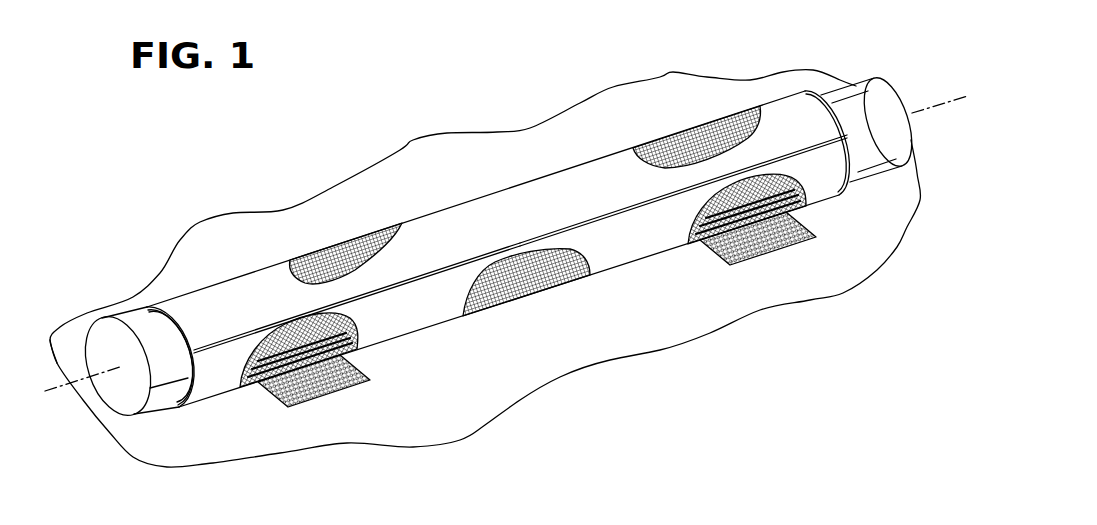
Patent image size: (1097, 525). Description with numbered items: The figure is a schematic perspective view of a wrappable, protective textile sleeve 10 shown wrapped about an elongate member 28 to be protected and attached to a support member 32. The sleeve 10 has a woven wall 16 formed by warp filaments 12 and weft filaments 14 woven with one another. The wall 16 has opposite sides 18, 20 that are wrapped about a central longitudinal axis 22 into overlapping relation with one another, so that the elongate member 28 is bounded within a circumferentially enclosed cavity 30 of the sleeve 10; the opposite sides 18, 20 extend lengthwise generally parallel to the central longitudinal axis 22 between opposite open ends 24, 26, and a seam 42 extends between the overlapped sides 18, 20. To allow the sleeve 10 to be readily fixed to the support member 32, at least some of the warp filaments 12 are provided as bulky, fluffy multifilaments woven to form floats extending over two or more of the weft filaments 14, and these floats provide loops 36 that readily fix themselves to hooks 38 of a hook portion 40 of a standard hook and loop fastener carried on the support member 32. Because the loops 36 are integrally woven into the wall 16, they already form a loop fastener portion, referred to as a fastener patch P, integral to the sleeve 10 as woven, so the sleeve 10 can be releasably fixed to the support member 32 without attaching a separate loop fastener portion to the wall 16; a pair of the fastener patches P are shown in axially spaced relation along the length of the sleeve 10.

The sleeve 10 is at (673, 96).
The warp filaments 12 is at (393, 240).
The weft filaments 14 is at (480, 285).
The wall 16 is at (507, 179).
The opposite side 18 is at (148, 312).
The opposite side 20 is at (428, 262).
The central longitudinal axis 22 is at (918, 110).
The open end 24 is at (177, 409).
The open end 26 is at (882, 88).
The elongate member 28 is at (853, 78).
The cavity 30 is at (174, 360).
The support member 32 is at (574, 339).
The loops 36 is at (290, 340).
The hooks 38 is at (346, 362).
The hook portion 40 is at (310, 400).
The seam 42 is at (606, 226).
The fastener patch P is at (263, 348).